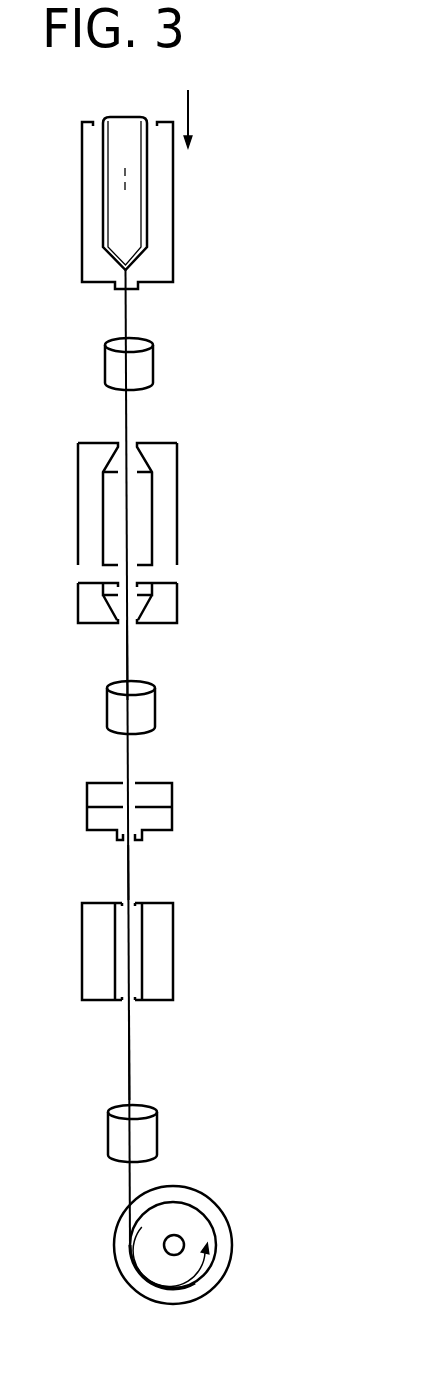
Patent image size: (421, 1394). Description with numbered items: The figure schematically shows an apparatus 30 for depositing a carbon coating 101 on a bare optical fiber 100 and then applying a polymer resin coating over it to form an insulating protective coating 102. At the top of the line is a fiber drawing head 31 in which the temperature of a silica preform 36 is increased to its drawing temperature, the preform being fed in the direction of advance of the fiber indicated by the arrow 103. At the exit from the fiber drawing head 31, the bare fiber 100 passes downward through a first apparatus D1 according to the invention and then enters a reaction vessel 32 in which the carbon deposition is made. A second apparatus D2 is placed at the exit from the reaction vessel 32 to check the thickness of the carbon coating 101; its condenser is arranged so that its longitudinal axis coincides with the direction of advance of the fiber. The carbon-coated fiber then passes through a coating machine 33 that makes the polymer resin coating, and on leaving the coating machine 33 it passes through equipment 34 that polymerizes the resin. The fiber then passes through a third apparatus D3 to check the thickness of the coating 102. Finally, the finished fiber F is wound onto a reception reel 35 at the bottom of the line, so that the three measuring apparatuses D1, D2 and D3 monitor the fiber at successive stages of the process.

The apparatus 30 is at (57, 200).
The fiber drawing head 31 is at (173, 203).
The silica preform 36 is at (127, 228).
The arrow 103 is at (188, 118).
The bare optical fiber 100 is at (126, 310).
The carbon coating 101 is at (127, 658).
The insulating protective coating 102 is at (128, 878).
The first apparatus D1 is at (143, 366).
The second apparatus D2 is at (145, 712).
The third apparatus D3 is at (150, 1132).
The reaction vessel 32 is at (178, 517).
The coating machine 33 is at (172, 810).
The equipment 34 is at (165, 947).
The finished fiber F is at (129, 1057).
The reception reel 35 is at (200, 1240).